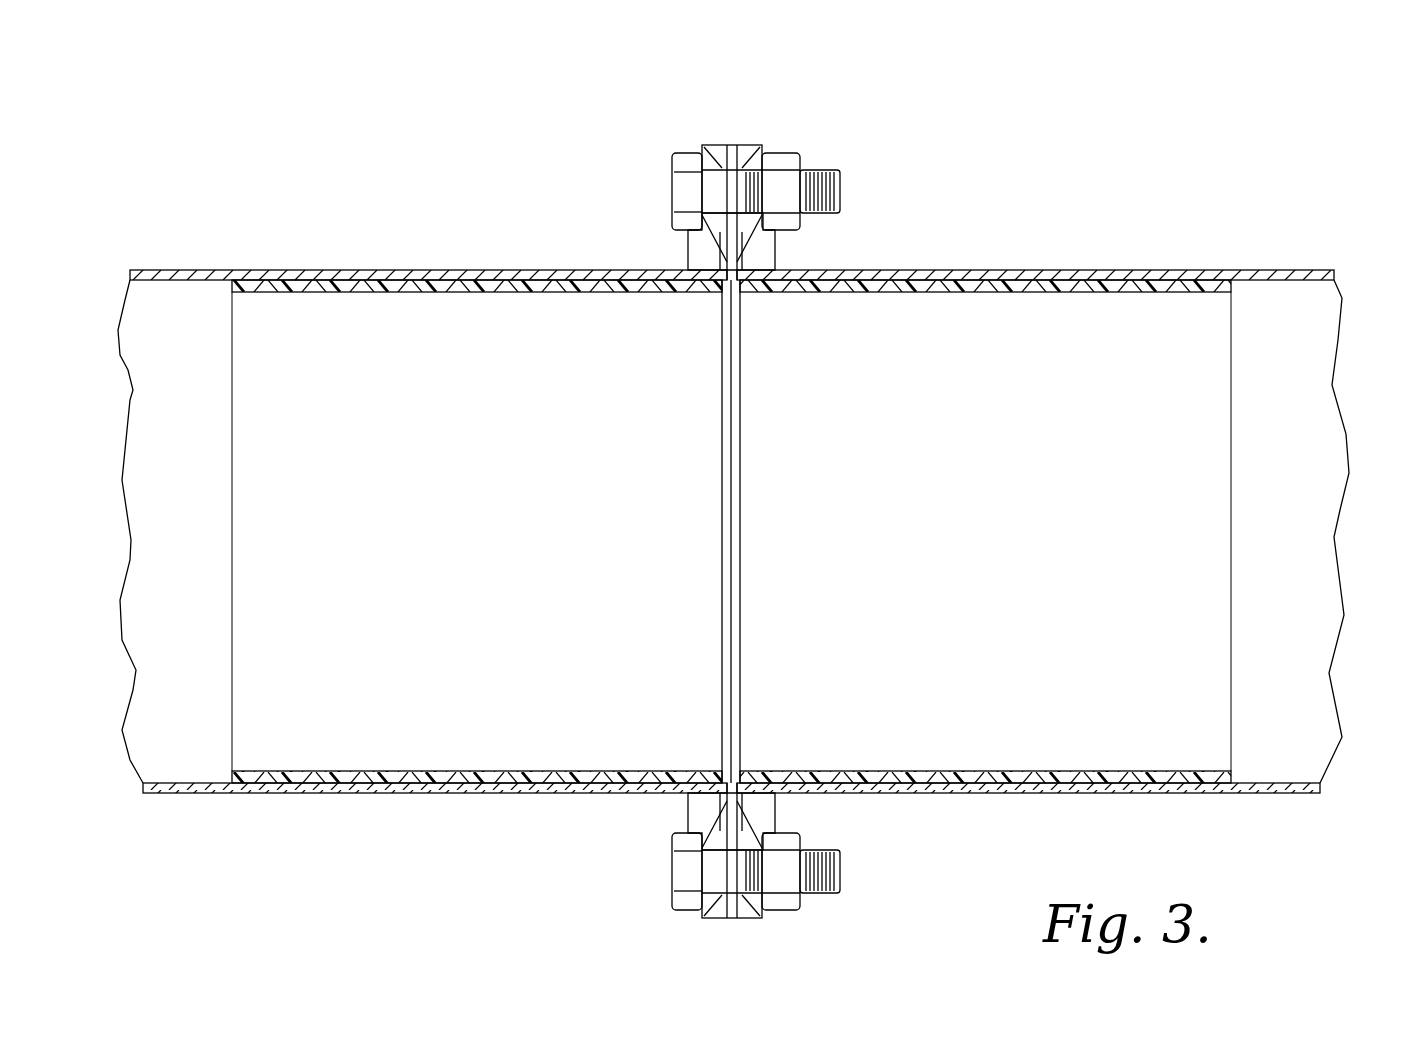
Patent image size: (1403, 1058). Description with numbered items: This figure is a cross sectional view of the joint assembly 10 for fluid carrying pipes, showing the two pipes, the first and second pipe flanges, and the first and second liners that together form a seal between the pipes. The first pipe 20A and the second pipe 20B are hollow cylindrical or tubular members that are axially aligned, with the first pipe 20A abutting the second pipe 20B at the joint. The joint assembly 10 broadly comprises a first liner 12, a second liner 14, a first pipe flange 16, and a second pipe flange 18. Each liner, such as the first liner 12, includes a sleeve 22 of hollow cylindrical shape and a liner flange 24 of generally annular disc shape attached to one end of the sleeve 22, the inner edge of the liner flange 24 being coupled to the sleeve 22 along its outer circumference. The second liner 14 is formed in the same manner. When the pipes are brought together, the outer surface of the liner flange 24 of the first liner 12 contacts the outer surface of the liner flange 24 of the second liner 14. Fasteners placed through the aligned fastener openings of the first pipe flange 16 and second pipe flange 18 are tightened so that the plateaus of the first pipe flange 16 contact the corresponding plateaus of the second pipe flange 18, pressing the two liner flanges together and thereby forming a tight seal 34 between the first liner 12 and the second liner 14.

The joint assembly 10 is at (745, 479).
The first liner 12 is at (422, 486).
The second liner 14 is at (1062, 501).
The first pipe flange 16 is at (680, 136).
The second pipe flange 18 is at (810, 139).
The first pipe 20A is at (148, 290).
The second pipe 20B is at (1295, 272).
The sleeve 22 is at (457, 290).
The liner flange 24 is at (726, 262).
The seal 34 is at (760, 500).